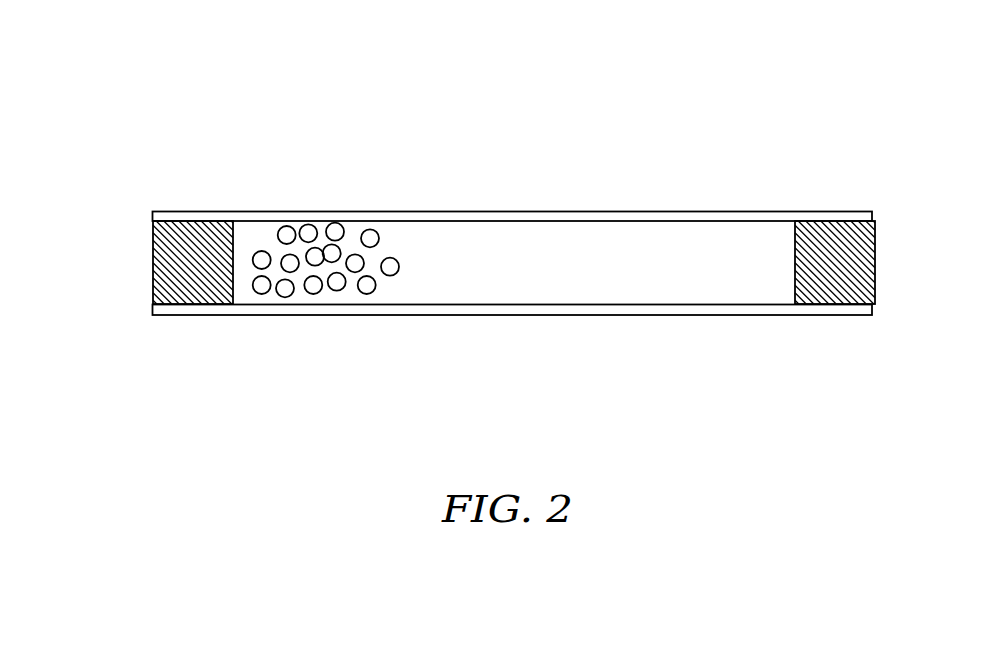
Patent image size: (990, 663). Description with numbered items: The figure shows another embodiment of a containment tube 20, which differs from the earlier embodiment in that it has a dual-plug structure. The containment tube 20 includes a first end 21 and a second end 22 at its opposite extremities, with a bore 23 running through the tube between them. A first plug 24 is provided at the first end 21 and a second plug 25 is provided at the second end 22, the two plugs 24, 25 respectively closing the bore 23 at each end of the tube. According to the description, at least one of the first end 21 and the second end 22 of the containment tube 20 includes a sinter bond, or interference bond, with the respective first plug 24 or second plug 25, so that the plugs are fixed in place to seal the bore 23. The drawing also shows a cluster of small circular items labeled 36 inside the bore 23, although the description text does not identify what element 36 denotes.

The containment tube 20 is at (808, 58).
The first end 21 is at (893, 209).
The second end 22 is at (145, 215).
The bore 23 is at (510, 275).
The first plug 24 is at (863, 267).
The second plug 25 is at (165, 277).
The particles 36 is at (301, 300).